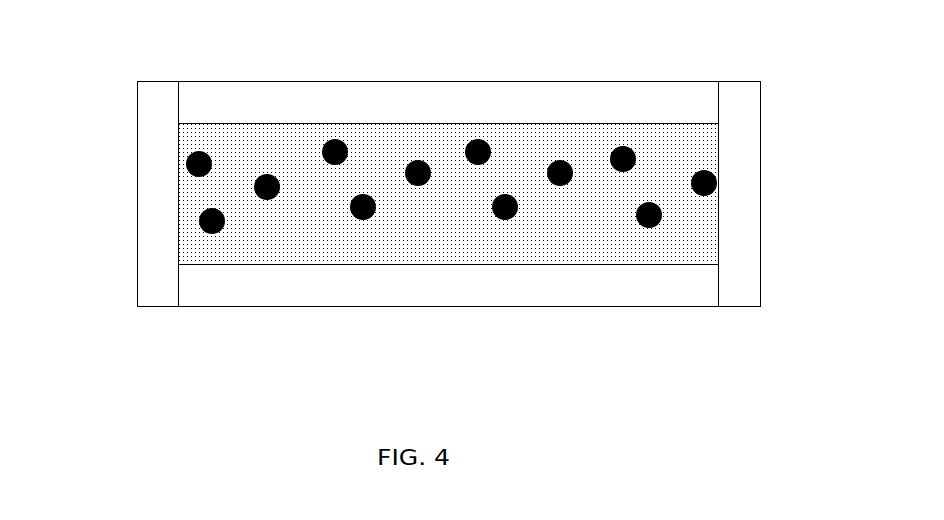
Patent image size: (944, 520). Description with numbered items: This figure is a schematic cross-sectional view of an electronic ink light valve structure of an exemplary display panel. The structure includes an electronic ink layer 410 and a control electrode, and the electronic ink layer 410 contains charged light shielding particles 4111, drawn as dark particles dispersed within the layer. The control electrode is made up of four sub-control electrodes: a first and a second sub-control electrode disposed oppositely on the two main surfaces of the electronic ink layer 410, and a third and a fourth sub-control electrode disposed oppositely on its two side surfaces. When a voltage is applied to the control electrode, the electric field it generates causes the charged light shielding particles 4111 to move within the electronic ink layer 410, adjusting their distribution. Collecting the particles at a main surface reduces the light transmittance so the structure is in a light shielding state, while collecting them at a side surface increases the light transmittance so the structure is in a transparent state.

The electronic ink layer 410 is at (658, 158).
The charged light shielding particles 4111 is at (487, 150).